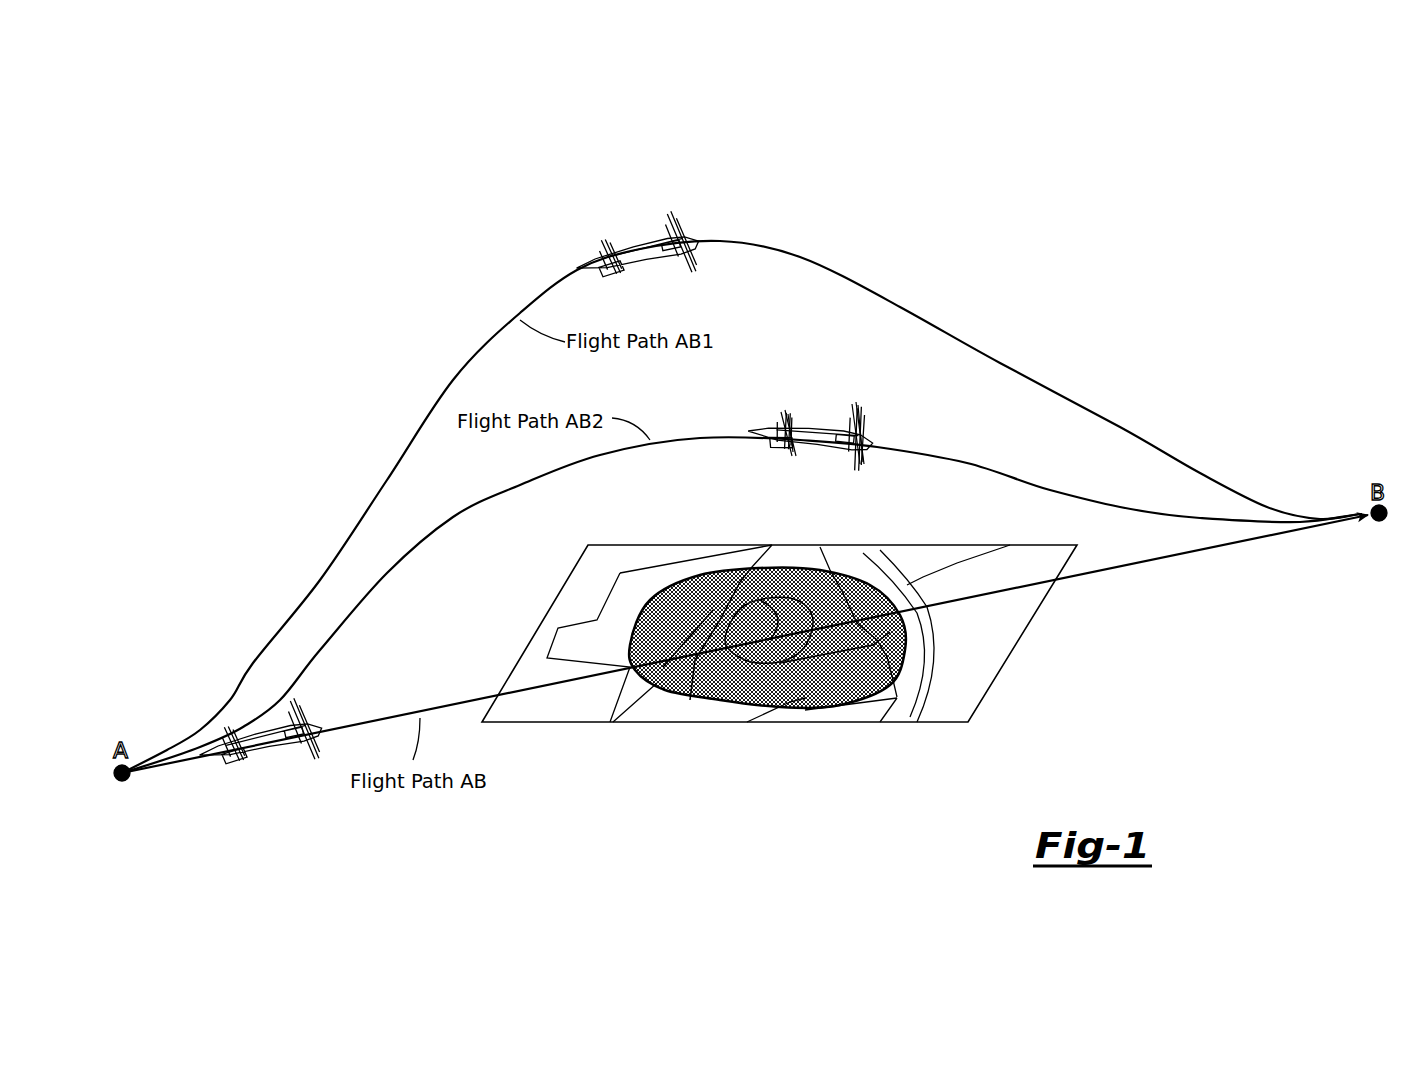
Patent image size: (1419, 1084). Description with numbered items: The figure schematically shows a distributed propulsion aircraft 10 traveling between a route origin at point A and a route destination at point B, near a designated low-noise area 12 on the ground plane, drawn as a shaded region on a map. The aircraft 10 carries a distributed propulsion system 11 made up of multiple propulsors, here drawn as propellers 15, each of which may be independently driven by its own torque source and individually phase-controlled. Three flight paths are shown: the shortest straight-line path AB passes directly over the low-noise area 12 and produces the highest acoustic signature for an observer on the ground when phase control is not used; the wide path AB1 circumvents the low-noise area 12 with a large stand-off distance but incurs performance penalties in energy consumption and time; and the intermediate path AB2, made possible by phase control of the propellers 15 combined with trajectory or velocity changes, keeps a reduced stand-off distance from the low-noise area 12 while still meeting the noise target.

The distributed propulsion aircraft 10 is at (690, 193).
The distributed propulsion system 11 is at (840, 404).
The designated low-noise area 12 is at (805, 702).
The propellers 15 is at (783, 417).